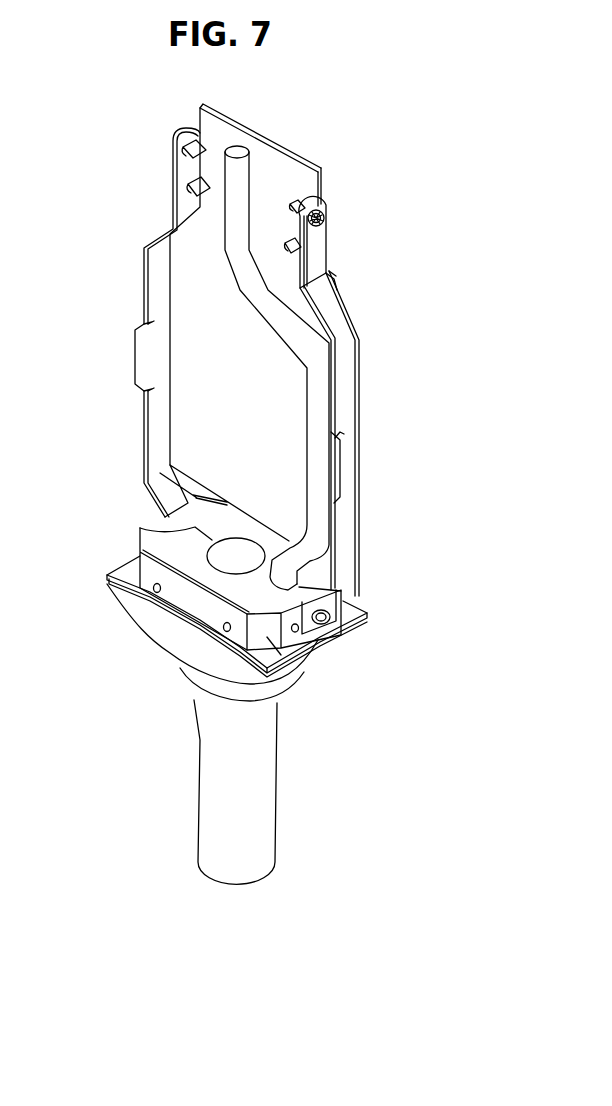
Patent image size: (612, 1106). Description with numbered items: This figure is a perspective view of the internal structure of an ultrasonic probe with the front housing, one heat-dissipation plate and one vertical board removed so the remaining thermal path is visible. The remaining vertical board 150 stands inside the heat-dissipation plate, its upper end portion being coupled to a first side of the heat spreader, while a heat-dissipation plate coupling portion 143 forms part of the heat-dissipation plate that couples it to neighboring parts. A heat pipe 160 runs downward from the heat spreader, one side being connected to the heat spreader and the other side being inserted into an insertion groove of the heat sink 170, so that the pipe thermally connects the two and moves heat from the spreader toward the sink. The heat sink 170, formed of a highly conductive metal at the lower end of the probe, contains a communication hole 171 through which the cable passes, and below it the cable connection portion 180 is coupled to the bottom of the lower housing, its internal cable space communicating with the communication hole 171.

The heat-dissipation plate coupling portion 143 is at (314, 239).
The vertical board 150 is at (208, 355).
The heat pipe 160 is at (241, 176).
The heat sink 170 is at (302, 652).
The communication hole 171 is at (244, 557).
The cable connection portion 180 is at (267, 783).